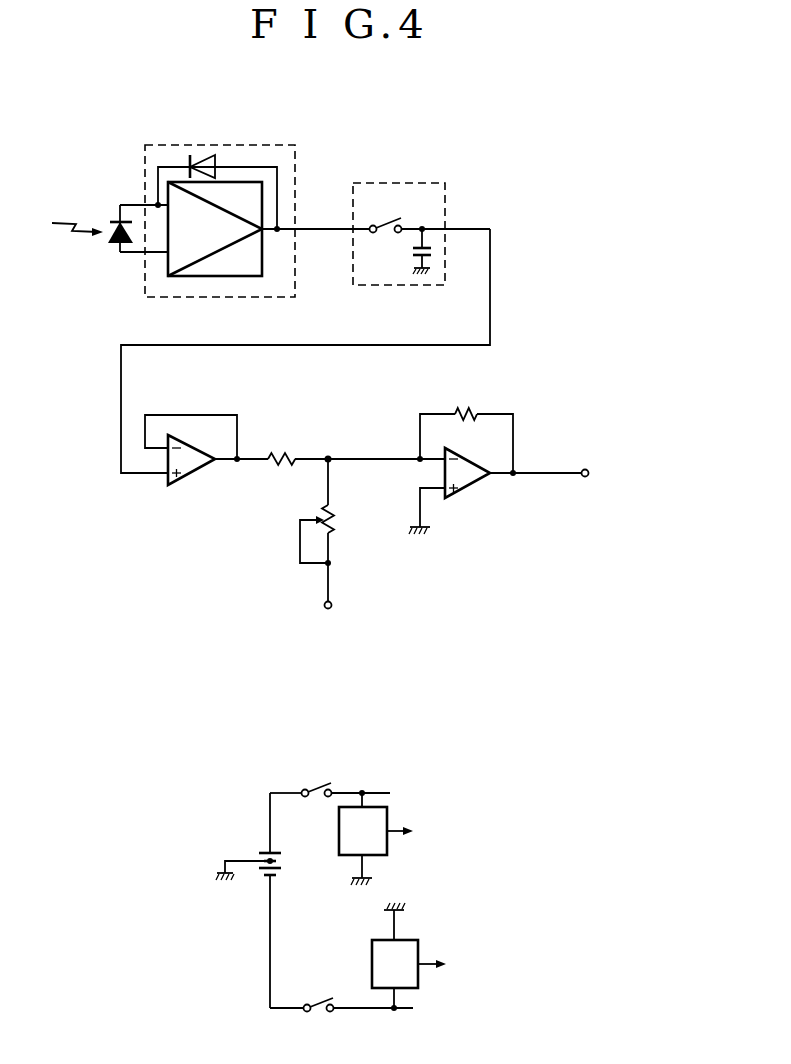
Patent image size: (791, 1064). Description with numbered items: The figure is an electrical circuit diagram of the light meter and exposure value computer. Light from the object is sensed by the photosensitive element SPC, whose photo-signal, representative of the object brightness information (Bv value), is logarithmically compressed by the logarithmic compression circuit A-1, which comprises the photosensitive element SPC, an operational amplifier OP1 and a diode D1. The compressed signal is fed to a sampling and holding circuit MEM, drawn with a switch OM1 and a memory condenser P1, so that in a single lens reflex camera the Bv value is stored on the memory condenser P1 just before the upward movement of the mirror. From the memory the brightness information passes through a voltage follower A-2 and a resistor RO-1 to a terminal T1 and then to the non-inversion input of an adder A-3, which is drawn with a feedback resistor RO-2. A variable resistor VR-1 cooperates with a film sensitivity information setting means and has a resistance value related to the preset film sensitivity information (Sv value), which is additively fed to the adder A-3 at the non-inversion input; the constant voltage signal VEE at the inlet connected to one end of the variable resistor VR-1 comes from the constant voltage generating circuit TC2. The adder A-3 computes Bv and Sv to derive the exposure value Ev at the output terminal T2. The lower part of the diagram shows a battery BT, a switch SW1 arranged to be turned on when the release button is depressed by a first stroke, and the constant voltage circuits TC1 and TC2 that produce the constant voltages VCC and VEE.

The photosensitive element SPC is at (122, 217).
The logarithmic compression circuit A-1 is at (273, 154).
The operational amplifier OP1 is at (218, 265).
The diode D1 is at (202, 156).
The sampling and holding circuit MEM is at (398, 183).
The memory switch OM1 is at (392, 222).
The memory condenser P1 is at (413, 250).
The voltage follower A-2 is at (188, 465).
The resistor RO-1 is at (281, 453).
The terminal T1 is at (333, 446).
The variable resistor VR-1 is at (334, 519).
The constant voltage signal VEE is at (397, 791).
The adder A-3 is at (465, 482).
The feedback resistor RO-2 is at (466, 410).
The output terminal (Ev) T2 is at (620, 477).
The switch SW1 is at (315, 788).
The battery BT is at (261, 856).
The constant voltage circuit TC1 is at (363, 839).
The constant voltage VCC is at (415, 834).
The constant voltage generating circuit TC2 is at (395, 955).